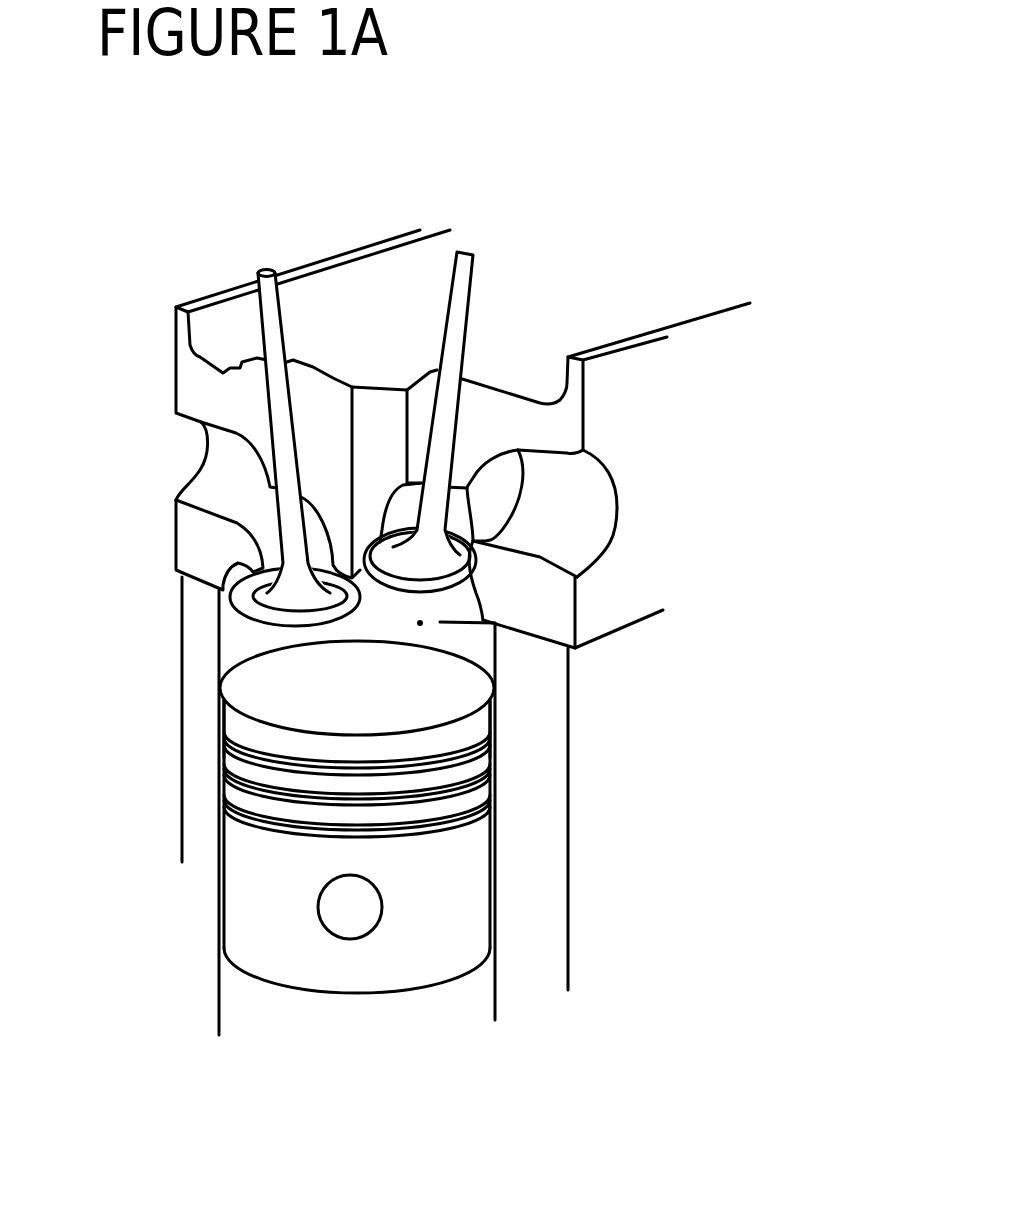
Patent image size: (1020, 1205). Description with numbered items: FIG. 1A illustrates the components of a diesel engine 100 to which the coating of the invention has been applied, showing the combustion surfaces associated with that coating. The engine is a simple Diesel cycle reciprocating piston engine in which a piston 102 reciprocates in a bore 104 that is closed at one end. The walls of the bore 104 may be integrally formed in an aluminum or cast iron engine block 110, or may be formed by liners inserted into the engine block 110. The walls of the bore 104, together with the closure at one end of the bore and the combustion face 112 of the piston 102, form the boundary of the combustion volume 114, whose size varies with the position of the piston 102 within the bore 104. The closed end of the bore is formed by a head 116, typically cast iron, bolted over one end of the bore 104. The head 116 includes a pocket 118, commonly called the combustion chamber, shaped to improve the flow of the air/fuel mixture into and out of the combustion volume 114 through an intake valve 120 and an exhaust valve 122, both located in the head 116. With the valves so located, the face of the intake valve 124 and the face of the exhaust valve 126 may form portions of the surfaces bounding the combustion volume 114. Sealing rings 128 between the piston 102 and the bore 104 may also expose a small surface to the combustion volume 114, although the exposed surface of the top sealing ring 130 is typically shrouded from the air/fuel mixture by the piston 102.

The diesel engine 100 is at (762, 507).
The piston 102 is at (238, 922).
The bore 104 is at (228, 637).
The engine block 110 is at (543, 810).
The combustion face 112 is at (222, 710).
The combustion volume 114 is at (497, 665).
The head 116 is at (190, 542).
The pocket 118 is at (337, 578).
The intake valve 120 is at (455, 295).
The exhaust valve 122 is at (272, 333).
The face of the intake valve 124 is at (537, 612).
The face of the exhaust valve 126 is at (268, 693).
The sealing rings 128 is at (233, 797).
The top sealing ring 130 is at (495, 733).